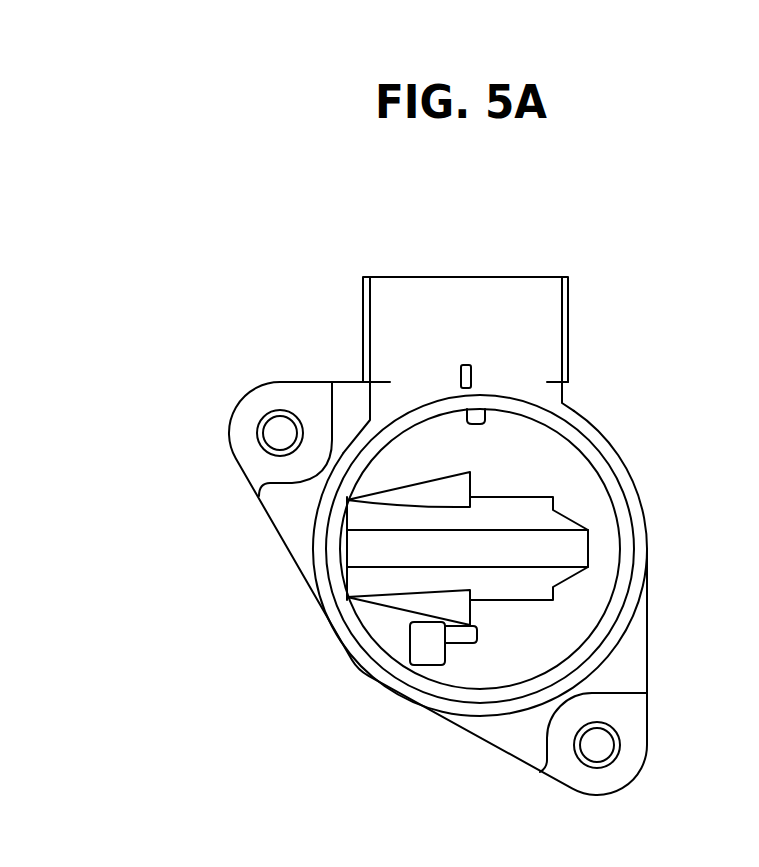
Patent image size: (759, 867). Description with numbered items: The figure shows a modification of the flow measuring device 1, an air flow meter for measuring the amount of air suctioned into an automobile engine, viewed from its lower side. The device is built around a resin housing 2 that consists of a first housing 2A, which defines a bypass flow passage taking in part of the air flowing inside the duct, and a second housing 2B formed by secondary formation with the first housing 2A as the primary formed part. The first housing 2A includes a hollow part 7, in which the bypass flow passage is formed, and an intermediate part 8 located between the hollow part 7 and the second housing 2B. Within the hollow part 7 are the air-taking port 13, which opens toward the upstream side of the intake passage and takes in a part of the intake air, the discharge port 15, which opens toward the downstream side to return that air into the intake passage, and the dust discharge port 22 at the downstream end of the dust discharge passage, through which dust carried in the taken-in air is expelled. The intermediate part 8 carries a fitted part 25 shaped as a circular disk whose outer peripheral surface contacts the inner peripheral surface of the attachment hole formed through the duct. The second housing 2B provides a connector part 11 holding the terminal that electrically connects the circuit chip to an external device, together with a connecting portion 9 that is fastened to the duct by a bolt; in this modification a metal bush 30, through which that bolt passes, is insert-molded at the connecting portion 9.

The flow measuring device 1 is at (630, 213).
The housing 2 is at (492, 502).
The first housing 2A is at (540, 490).
The second housing 2B is at (540, 350).
The hollow part 7 is at (535, 588).
The intermediate part 8 is at (542, 549).
The connector part 11 is at (497, 295).
The air-taking port 13 is at (347, 553).
The discharge port 15 is at (473, 490).
The dust discharge port 22 is at (590, 543).
The fitted part 25 is at (588, 503).
The connecting portion 9 is at (243, 432).
The metal bush 30 is at (262, 452).